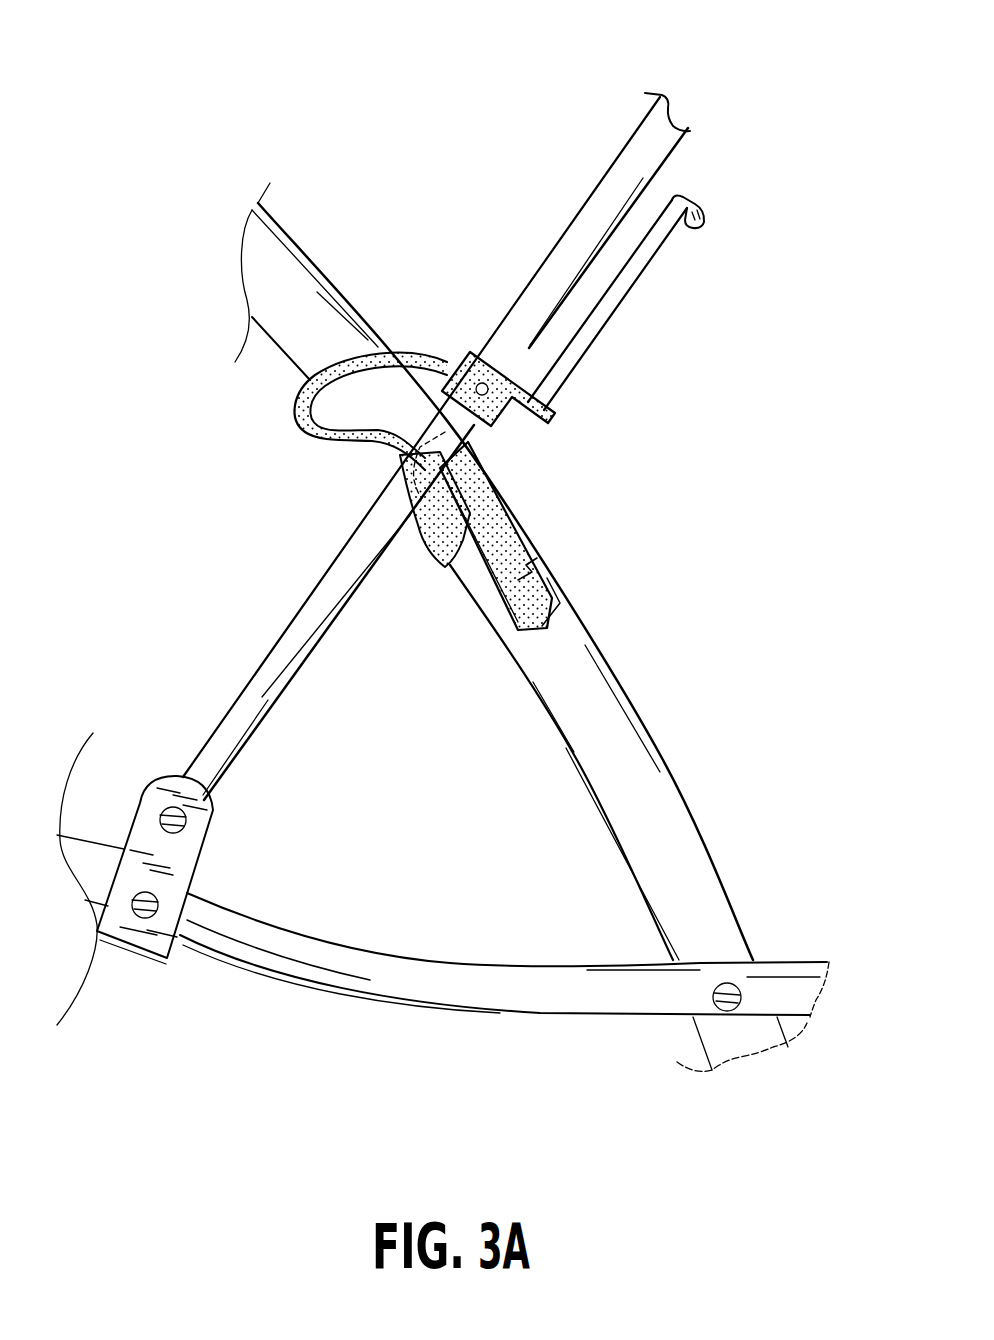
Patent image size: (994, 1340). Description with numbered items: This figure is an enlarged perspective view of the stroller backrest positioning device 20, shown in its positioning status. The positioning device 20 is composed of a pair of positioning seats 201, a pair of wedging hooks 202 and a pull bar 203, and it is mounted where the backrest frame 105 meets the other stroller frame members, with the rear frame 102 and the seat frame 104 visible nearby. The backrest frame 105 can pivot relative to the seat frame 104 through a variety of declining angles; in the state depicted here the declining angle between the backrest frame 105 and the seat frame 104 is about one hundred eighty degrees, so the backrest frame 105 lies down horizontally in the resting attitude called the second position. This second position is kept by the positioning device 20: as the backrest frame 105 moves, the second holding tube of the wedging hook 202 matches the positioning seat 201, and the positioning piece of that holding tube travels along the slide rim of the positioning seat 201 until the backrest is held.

The positioning device 20 is at (490, 258).
The positioning seat 201 is at (537, 549).
The wedging hook 202 is at (362, 357).
The pull bar 203 is at (578, 363).
The rear frame 102 is at (650, 772).
The seat frame 104 is at (370, 973).
The backrest frame 105 is at (645, 170).